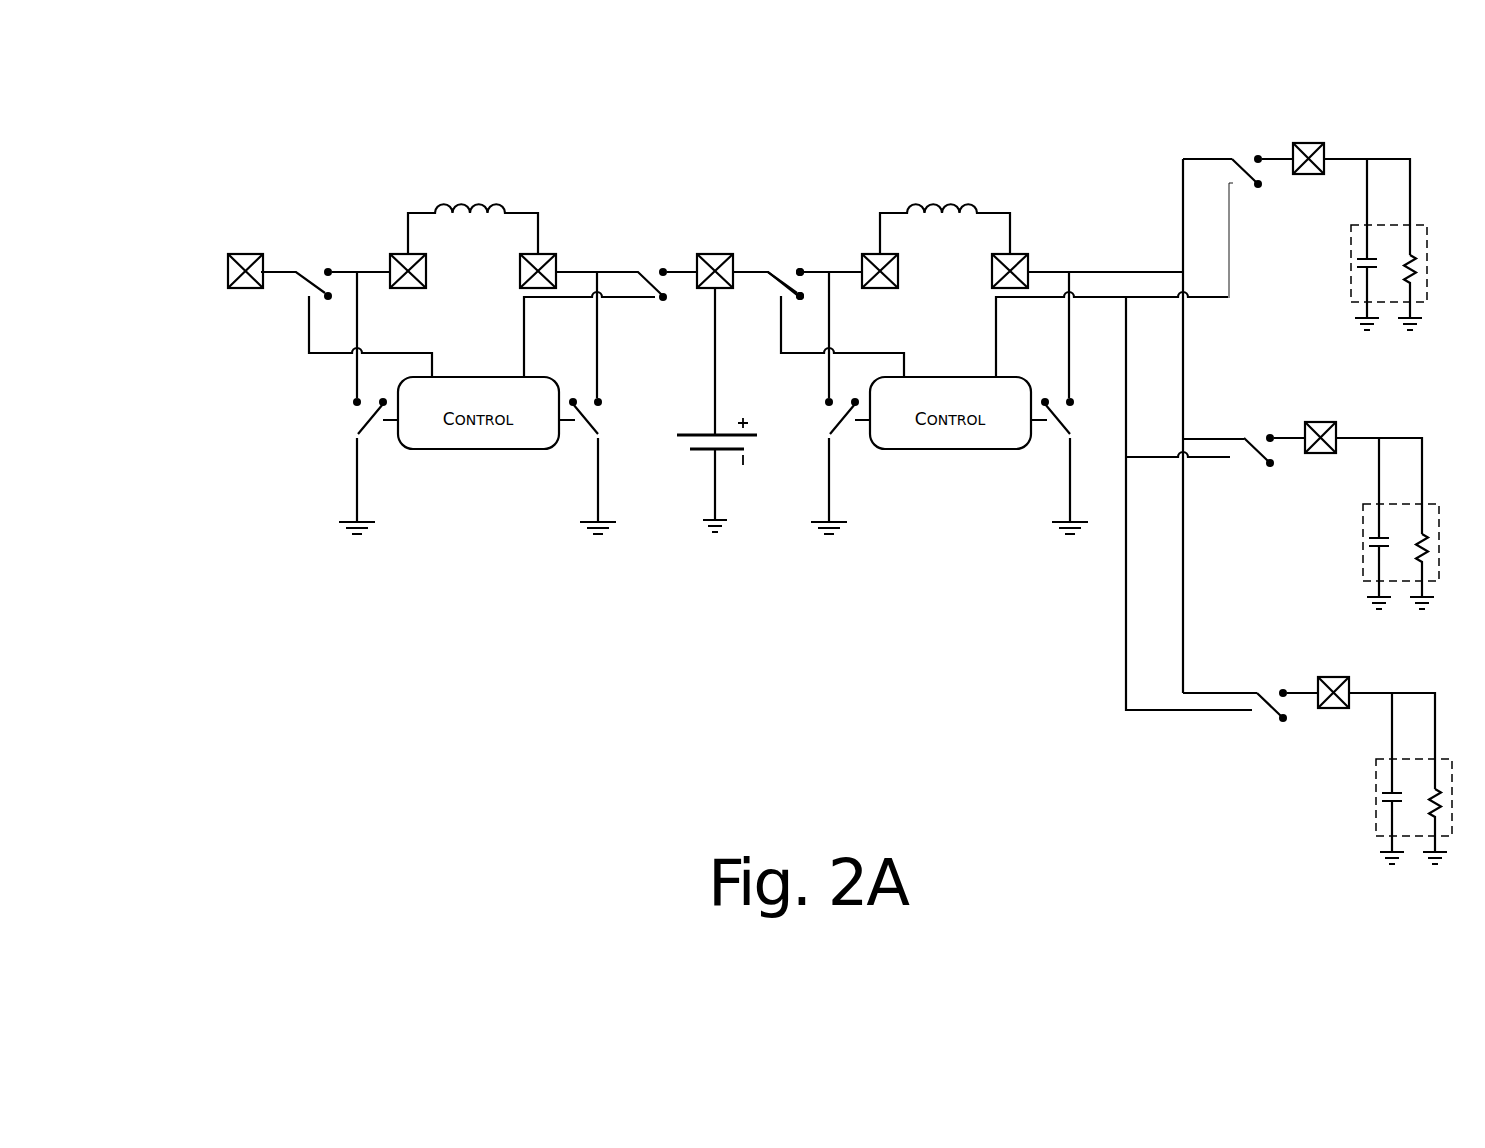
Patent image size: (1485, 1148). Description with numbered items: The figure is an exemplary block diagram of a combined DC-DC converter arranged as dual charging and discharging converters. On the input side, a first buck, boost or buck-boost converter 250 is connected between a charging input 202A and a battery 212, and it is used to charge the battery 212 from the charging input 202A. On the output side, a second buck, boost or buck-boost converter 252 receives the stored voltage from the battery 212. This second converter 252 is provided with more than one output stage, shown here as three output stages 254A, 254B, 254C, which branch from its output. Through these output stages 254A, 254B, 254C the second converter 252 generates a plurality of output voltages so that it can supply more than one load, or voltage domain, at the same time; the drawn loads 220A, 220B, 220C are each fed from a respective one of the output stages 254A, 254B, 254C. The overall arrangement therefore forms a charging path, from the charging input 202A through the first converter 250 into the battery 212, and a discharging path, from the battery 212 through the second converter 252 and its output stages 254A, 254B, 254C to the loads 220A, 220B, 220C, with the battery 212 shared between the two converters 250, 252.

The charging input 202A is at (251, 253).
The battery 212 is at (701, 426).
The first buck, boost or buck-boost converter 250 is at (457, 600).
The second buck, boost or buck-boost converter 252 is at (940, 585).
The output stage 254A is at (1292, 98).
The output stage 254B is at (1313, 382).
The output stage 254C is at (1265, 797).
The load 220A is at (1350, 283).
The load 220B is at (1362, 570).
The load 220C is at (1362, 840).